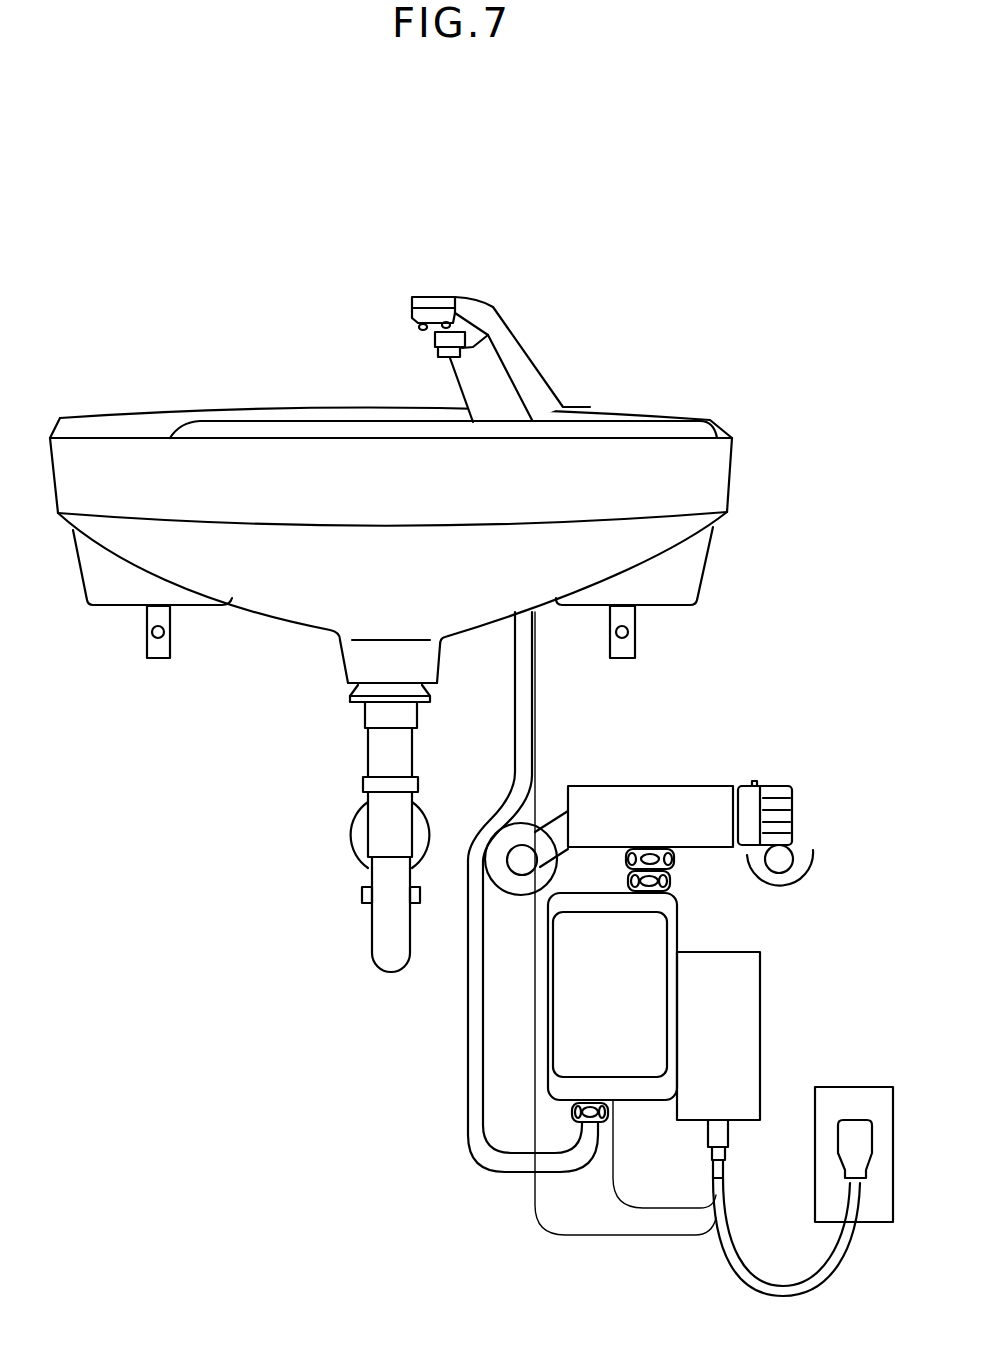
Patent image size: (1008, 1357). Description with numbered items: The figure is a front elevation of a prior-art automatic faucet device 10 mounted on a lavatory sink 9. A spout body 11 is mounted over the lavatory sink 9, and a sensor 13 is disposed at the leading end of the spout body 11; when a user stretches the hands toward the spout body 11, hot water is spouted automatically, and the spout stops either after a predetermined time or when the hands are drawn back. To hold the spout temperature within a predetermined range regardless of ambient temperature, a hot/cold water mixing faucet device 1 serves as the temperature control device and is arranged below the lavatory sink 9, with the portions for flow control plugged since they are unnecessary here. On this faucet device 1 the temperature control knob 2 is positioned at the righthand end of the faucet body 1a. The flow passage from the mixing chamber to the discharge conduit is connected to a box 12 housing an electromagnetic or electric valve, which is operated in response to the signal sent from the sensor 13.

The hot/cold water mixing faucet device 1 is at (675, 868).
The faucet body 1a is at (678, 785).
The temperature control knob 2 is at (783, 784).
The lavatory sink 9 is at (732, 488).
The automatic faucet device 10 is at (484, 691).
The spout body 11 is at (521, 345).
The box 12 is at (679, 928).
The sensor 13 is at (445, 329).